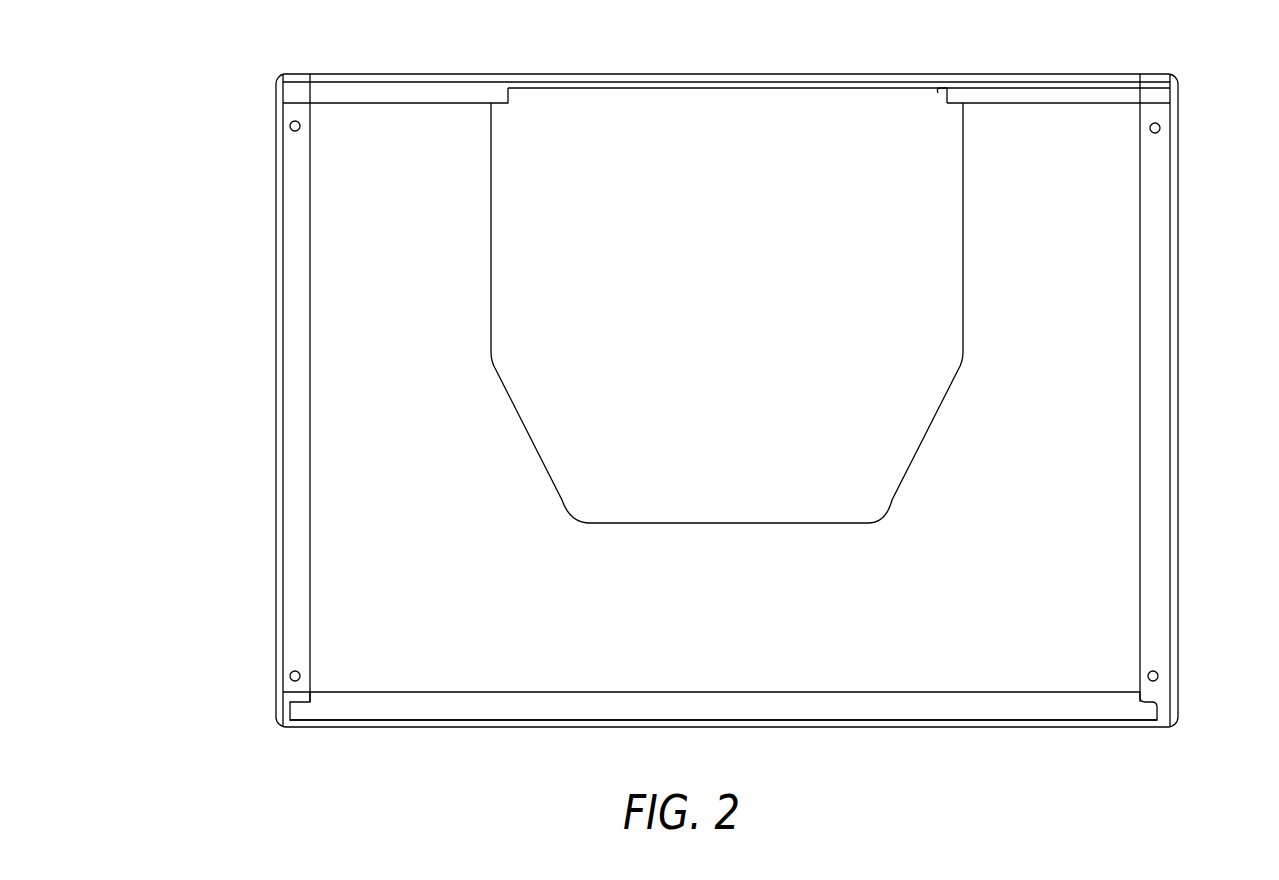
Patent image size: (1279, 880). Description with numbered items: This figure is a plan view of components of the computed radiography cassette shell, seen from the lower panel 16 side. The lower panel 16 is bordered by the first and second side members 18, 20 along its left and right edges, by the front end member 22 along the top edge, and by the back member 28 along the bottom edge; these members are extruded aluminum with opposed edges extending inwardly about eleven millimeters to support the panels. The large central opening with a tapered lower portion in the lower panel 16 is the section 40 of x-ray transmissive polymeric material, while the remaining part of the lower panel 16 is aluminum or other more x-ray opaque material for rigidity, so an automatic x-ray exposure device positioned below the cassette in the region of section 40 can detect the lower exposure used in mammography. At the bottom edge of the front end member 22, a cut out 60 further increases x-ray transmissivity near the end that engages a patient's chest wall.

The lower panel 16 is at (393, 677).
The first side member 18 is at (288, 433).
The second side member 20 is at (1160, 364).
The front end member 22 is at (1060, 93).
The back member 28 is at (1038, 723).
The x-ray transmissive section 40 is at (752, 108).
The cut out 60 is at (940, 95).